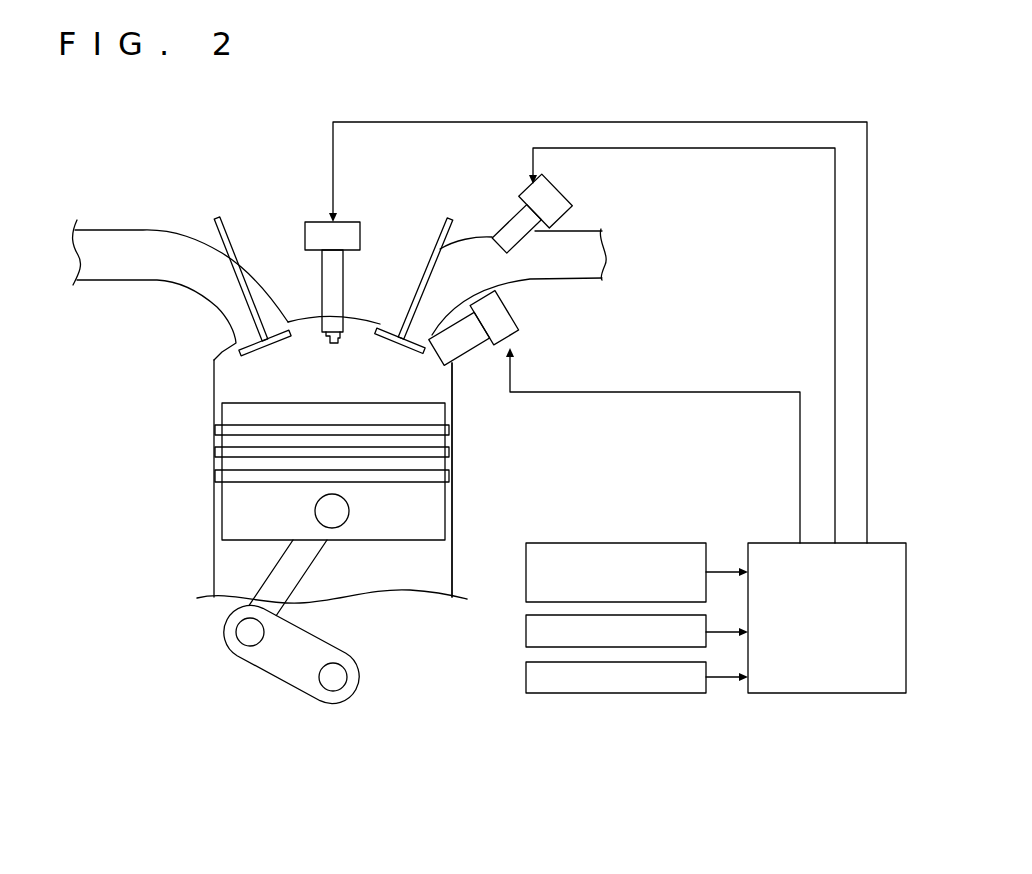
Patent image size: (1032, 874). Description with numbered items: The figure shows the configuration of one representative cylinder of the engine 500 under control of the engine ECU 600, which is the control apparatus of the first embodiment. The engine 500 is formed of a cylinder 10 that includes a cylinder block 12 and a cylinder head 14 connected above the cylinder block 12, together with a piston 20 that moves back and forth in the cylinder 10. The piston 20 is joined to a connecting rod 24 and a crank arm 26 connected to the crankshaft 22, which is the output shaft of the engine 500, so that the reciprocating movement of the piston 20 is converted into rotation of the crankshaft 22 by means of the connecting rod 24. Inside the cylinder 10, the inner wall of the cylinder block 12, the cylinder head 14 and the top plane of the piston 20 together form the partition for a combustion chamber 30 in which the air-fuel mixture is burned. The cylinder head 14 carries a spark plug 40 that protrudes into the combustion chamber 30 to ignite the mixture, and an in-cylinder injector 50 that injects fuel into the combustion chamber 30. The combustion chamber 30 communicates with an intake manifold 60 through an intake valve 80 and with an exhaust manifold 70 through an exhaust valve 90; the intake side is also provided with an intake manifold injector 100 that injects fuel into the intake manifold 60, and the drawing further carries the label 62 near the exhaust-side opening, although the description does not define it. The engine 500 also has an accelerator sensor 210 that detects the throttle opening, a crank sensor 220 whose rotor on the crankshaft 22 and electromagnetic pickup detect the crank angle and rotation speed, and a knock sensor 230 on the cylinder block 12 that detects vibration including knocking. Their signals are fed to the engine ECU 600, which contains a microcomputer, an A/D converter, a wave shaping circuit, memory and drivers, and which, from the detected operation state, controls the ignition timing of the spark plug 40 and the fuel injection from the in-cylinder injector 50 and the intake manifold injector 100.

The cylinder 10 is at (192, 426).
The cylinder block 12 is at (453, 500).
The cylinder head 14 is at (223, 348).
The piston 20 is at (382, 528).
The crankshaft 22 is at (350, 680).
The connecting rod 24 is at (300, 565).
The crank arm 26 is at (278, 676).
The combustion chamber 30 is at (233, 387).
The spark plug 40 is at (322, 287).
The in-cylinder injector 50 is at (498, 348).
The intake manifold 60 is at (481, 280).
The exhaust port opening 62 is at (424, 328).
The exhaust manifold 70 is at (127, 280).
The intake valve 80 is at (390, 343).
The exhaust valve 90 is at (272, 350).
The intake manifold injector 100 is at (525, 186).
The accelerator sensor 210 is at (643, 543).
The crank sensor 220 is at (526, 630).
The knock sensor 230 is at (642, 694).
The engine 500 is at (258, 160).
The engine ECU 600 is at (777, 543).